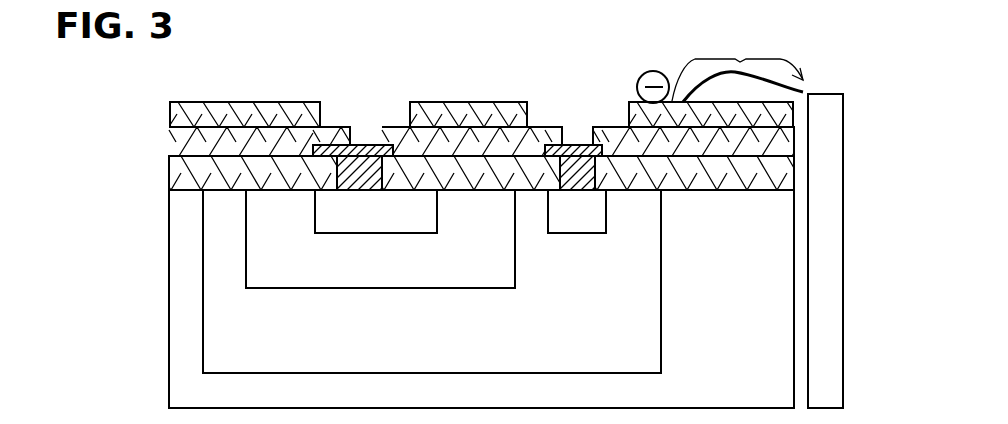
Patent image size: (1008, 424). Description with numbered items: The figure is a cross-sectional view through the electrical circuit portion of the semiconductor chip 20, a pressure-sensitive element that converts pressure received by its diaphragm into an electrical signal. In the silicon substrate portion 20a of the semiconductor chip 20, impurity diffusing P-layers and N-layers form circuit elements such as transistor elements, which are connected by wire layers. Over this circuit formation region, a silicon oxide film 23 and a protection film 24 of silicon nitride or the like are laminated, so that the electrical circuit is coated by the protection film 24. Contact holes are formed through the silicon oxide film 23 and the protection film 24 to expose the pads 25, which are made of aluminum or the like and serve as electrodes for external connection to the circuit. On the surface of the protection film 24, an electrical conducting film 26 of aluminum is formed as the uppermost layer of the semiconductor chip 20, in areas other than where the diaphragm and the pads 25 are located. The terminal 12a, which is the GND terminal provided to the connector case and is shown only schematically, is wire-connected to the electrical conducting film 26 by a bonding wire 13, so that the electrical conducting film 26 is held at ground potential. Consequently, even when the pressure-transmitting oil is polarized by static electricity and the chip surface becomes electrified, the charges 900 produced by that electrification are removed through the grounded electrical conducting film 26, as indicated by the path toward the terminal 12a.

The semiconductor chip 20 is at (168, 350).
The silicon substrate portion 20a is at (187, 304).
The silicon oxide film 23 is at (180, 180).
The protection film 24 is at (190, 144).
The pads 25 is at (362, 148).
The electrical conducting film 26 is at (185, 113).
The terminal 12a is at (827, 287).
The bonding wire 13 is at (805, 92).
The charges 900 is at (654, 71).